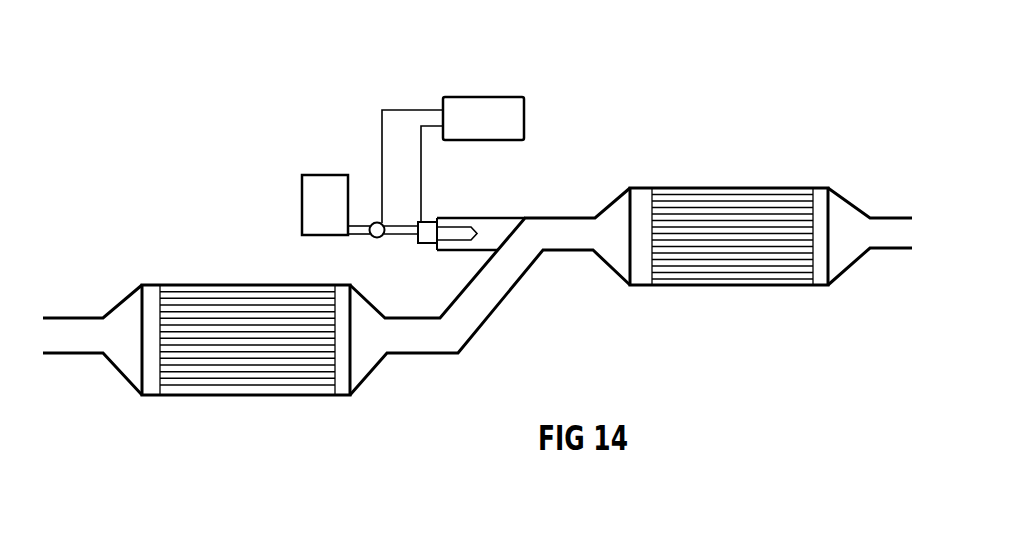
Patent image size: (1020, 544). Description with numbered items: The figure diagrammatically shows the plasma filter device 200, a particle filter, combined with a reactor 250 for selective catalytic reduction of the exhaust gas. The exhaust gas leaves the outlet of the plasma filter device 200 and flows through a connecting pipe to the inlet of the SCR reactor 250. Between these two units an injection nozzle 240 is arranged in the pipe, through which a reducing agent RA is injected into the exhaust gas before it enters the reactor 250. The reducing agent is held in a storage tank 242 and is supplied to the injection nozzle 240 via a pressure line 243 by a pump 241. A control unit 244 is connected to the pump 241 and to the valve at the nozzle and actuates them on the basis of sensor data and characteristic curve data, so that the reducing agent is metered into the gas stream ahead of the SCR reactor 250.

The plasma filter device 200 is at (253, 372).
The reactor for selective catalytic reduction 250 is at (735, 213).
The injection nozzle 240 is at (428, 225).
The pump 241 is at (367, 222).
The storage tank 242 is at (302, 203).
The pressure line 243 is at (405, 236).
The control unit 244 is at (478, 112).